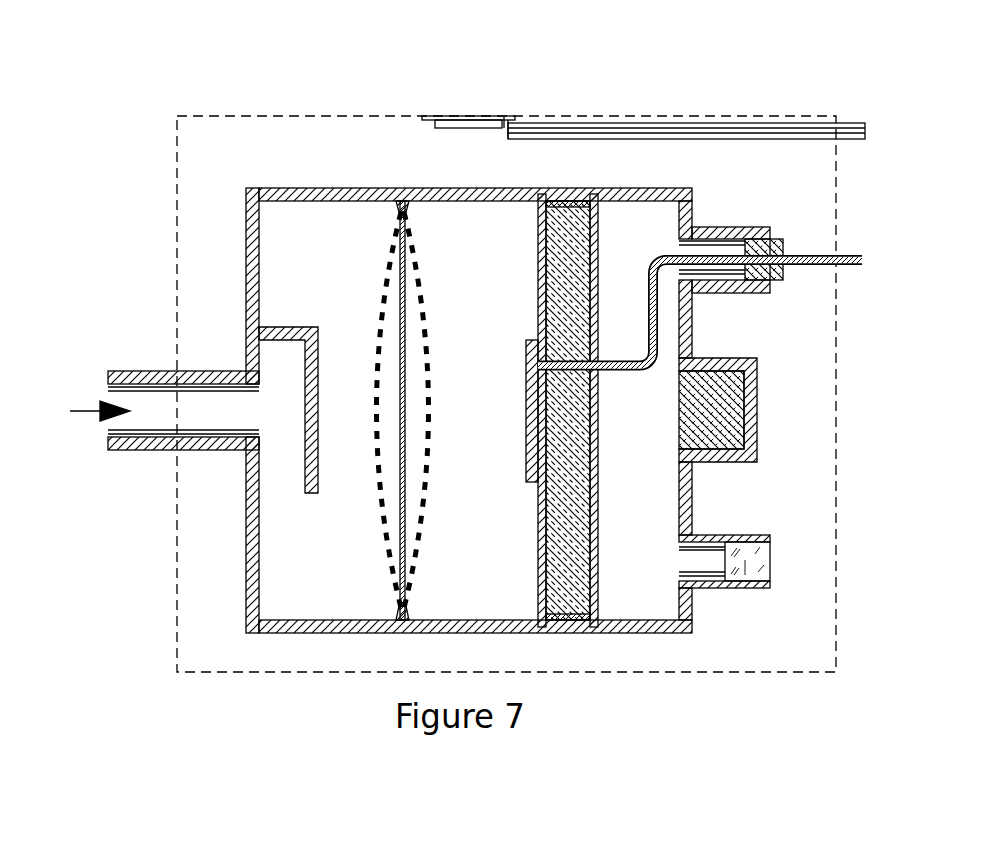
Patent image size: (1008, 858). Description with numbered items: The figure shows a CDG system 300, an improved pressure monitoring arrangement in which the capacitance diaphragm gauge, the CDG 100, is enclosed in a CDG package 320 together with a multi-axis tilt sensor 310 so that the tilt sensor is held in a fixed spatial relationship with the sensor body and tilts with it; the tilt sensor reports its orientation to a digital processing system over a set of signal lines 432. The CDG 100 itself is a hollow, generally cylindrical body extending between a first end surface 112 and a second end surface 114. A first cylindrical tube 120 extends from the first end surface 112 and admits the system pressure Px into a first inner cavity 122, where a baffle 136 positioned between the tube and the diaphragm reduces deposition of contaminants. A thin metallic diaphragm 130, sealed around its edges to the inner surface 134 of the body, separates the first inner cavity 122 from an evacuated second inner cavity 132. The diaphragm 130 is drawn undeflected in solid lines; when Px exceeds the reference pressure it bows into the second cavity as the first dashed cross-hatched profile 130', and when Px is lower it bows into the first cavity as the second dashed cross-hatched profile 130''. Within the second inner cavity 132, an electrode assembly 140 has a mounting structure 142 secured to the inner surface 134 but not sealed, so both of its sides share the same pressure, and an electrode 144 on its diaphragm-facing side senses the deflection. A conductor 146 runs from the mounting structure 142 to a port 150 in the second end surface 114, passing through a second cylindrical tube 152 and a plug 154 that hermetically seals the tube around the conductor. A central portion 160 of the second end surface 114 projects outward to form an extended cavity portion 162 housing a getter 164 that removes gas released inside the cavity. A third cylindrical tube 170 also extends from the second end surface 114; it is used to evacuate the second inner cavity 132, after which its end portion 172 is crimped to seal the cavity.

The CDG system 300 is at (340, 50).
The CDG package 320 is at (384, 116).
The multi-axis tilt sensor 310 is at (468, 130).
The set of signal lines 432 is at (598, 140).
The CDG 100 is at (470, 430).
The first end surface 112 is at (246, 280).
The second end surface 114 is at (693, 523).
The first cylindrical tube 120 is at (230, 370).
The first inner cavity 122 is at (290, 558).
The diaphragm 130 is at (402, 410).
The first dashed cross-hatched profile 130' is at (441, 410).
The second dashed cross-hatched profile 130'' is at (363, 410).
The second inner cavity 132 is at (645, 587).
The inner surface 134 is at (283, 202).
The baffle 136 is at (305, 475).
The electrode assembly 140 is at (522, 410).
The mounting structure 142 is at (538, 589).
The electrode 144 is at (526, 445).
The conductor 146 is at (672, 257).
The port 150 is at (757, 236).
The second cylindrical tube 152 is at (742, 228).
The plug 154 is at (768, 238).
The central portion 160 is at (712, 409).
The extended cavity portion 162 is at (673, 398).
The getter 164 is at (685, 438).
The third cylindrical tube 170 is at (744, 555).
The end portion 172 is at (742, 570).